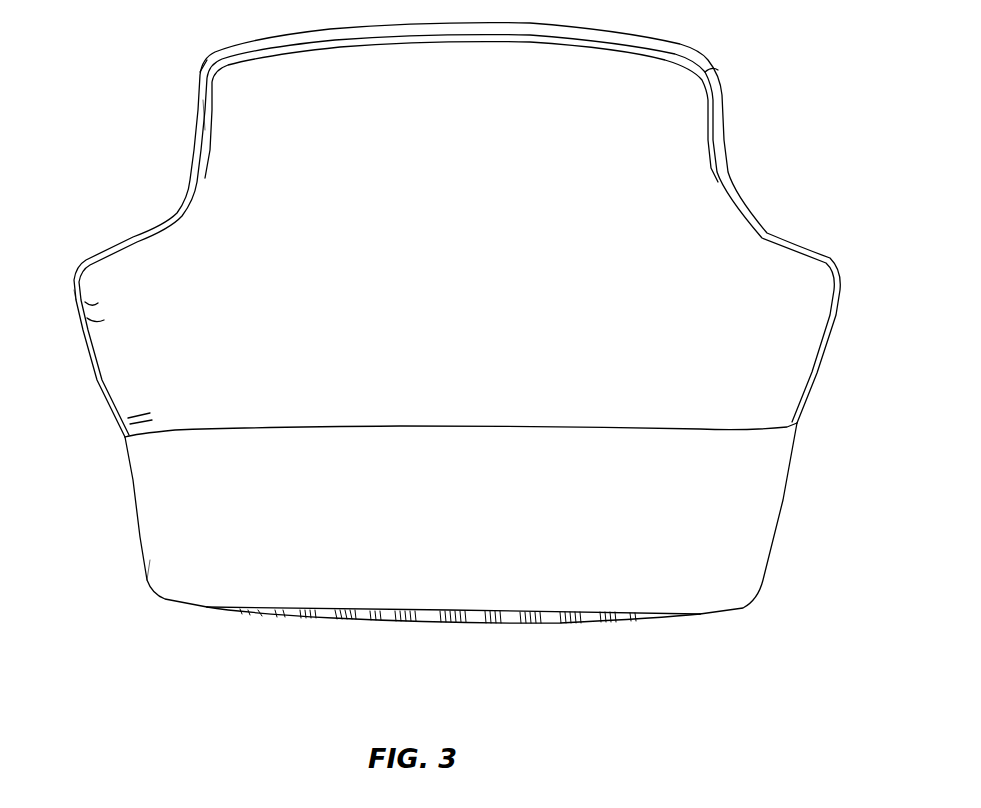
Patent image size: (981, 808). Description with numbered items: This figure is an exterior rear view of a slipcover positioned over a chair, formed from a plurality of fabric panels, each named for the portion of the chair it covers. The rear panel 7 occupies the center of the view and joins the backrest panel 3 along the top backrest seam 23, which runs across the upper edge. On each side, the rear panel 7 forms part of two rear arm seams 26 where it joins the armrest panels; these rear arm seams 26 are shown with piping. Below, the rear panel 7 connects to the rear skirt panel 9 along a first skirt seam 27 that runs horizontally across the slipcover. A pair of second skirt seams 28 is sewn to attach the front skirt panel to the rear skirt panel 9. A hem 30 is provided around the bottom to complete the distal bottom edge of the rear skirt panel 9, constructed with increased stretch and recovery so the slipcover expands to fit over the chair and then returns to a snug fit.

The backrest panel 3 is at (683, 57).
The rear panel 7 is at (650, 238).
The top backrest seam 23 is at (213, 57).
The rear arm seams 26 is at (102, 243).
The first skirt seam 27 is at (175, 432).
The second skirt seams 28 is at (137, 520).
The rear skirt panel 9 is at (195, 567).
The hem 30 is at (613, 623).